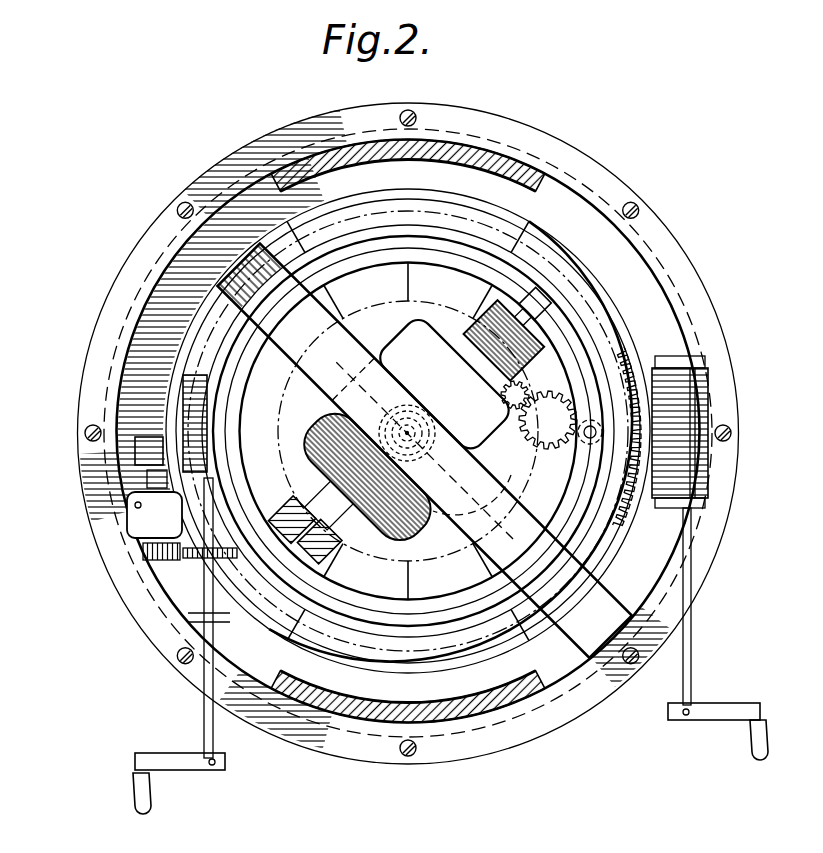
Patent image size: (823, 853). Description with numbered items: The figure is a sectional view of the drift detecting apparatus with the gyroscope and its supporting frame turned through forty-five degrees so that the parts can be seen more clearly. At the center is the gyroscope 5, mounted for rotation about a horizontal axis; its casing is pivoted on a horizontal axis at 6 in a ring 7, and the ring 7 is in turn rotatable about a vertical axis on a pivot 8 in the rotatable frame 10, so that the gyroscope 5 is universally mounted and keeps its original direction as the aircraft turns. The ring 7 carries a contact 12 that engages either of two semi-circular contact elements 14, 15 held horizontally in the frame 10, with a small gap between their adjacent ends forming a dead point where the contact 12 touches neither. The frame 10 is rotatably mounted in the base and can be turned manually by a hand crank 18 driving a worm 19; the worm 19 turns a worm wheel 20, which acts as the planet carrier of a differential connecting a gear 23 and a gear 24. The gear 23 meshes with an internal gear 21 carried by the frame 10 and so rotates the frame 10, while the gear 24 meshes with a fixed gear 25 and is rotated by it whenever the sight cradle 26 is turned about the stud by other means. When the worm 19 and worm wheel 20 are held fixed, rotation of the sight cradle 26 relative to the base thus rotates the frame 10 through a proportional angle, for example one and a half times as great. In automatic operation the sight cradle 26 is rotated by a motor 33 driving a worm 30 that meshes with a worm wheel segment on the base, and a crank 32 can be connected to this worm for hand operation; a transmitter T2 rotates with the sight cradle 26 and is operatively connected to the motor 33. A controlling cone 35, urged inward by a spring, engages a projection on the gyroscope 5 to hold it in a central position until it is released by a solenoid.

The gyroscope 5 is at (410, 348).
The horizontal axis pivot 6 is at (303, 548).
The ring 7 is at (477, 318).
The pivot 8 is at (426, 452).
The rotatable frame 10 is at (436, 232).
The contact 12 is at (535, 292).
The semi-circular contact element 14 is at (481, 263).
The semi-circular contact element 15 is at (560, 323).
The hand crank 18 is at (748, 752).
The worm 19 is at (708, 392).
The worm wheel 20 is at (526, 388).
The internal gear 21 is at (627, 363).
The gear 23 is at (577, 433).
The gear 24 is at (562, 393).
The fixed gear 25 is at (496, 442).
The sight cradle 26 is at (472, 150).
The worm 30 is at (182, 431).
The crank 32 is at (156, 783).
The motor 33 is at (153, 517).
The controlling cone 35 is at (331, 300).
The transmitter T2 is at (134, 455).